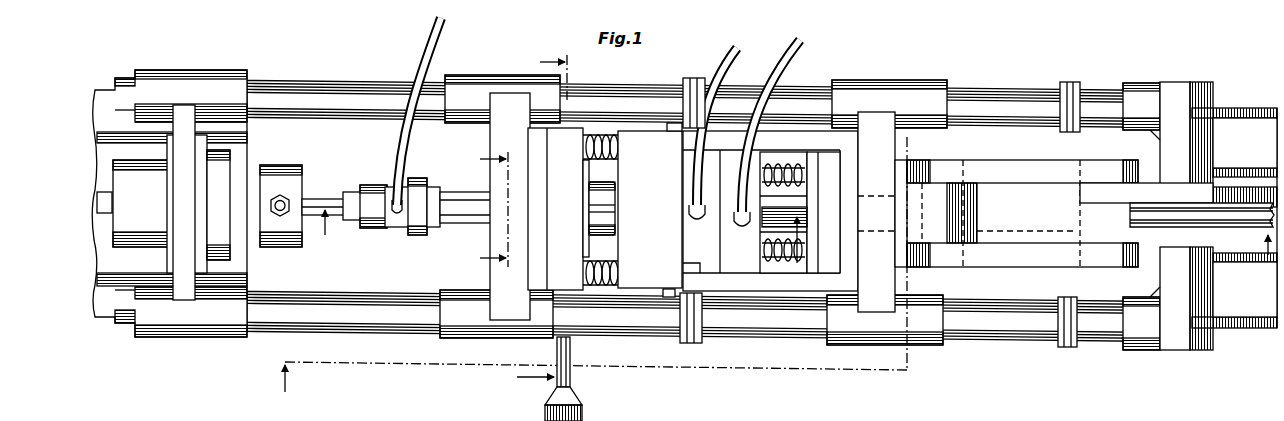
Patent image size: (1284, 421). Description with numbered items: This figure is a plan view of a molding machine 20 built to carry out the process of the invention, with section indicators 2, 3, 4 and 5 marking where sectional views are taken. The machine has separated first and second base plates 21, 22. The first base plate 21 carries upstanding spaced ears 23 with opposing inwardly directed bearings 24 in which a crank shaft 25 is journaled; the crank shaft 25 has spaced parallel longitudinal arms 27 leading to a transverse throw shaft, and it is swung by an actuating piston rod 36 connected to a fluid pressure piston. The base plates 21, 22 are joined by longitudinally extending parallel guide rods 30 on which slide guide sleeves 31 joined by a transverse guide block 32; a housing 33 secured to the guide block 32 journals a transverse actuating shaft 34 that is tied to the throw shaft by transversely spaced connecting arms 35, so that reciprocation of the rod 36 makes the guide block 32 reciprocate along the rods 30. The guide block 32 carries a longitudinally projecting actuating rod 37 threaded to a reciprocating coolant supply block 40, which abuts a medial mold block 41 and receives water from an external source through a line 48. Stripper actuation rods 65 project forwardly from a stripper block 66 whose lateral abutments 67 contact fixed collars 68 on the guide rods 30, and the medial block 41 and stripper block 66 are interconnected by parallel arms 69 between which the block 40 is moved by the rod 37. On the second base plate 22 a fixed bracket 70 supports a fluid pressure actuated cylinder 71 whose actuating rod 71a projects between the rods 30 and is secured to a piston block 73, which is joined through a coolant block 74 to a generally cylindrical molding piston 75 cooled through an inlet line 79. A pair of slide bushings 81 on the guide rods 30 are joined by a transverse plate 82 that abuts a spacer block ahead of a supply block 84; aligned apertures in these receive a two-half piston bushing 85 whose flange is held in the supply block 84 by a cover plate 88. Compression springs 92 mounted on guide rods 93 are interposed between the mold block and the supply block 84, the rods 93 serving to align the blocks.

The section line 2- 2 is at (776, 316).
The section line 3- 3 is at (561, 243).
The section line 4- 4 is at (546, 232).
The section line 5- 5 is at (486, 210).
The machine 20 is at (788, 338).
The first base plate 21 is at (1247, 307).
The second base plate 22 is at (105, 232).
The upstanding spaced ears 23 is at (1222, 112).
The bearings 24 is at (1188, 88).
The crank shaft 25 is at (1125, 184).
The longitudinal arms 27 is at (1187, 193).
The guide rods 30 is at (328, 82).
The guide sleeves 31 is at (907, 90).
The guide block 32 is at (883, 283).
The housing 33 is at (927, 205).
The actuating shaft 34 is at (967, 170).
The connecting arms 35 is at (1042, 181).
The actuating piston rod 36 is at (1243, 207).
The actuating rod 37 is at (761, 229).
The coolant supply block 40 is at (727, 229).
The medial mold block 41 is at (683, 240).
The coolant line 48 is at (798, 50).
The stripper actuation rods 65 is at (803, 175).
The stripper block 66 is at (846, 247).
The lateral abutments 67 is at (667, 291).
The fixed collars 68 is at (693, 78).
The parallel arms 69 is at (740, 283).
The fixed bracket 70 is at (187, 300).
The fluid pressure actuated cylinder 71 is at (274, 174).
The actuating rod 71a is at (316, 199).
The piston block 73 is at (370, 186).
The coolant block 74 is at (384, 228).
The molding piston 75 is at (466, 230).
The inlet line 79 is at (402, 168).
The slide bushings 81 is at (472, 88).
The transverse plate 82 is at (505, 313).
The supply block 84 is at (555, 209).
The piston bushing 85 is at (605, 206).
The cover plate 88 is at (590, 175).
The compression springs 92 is at (613, 148).
The guide rods 93 is at (587, 148).